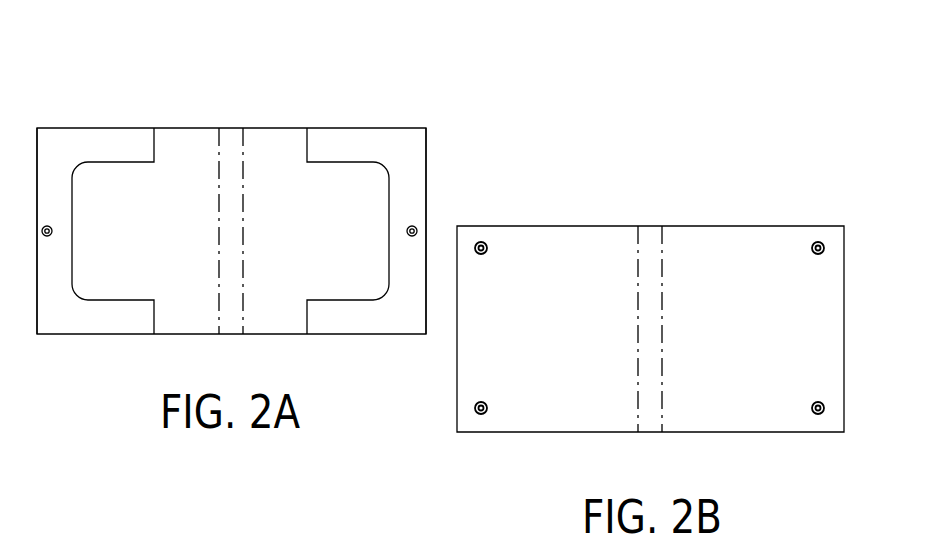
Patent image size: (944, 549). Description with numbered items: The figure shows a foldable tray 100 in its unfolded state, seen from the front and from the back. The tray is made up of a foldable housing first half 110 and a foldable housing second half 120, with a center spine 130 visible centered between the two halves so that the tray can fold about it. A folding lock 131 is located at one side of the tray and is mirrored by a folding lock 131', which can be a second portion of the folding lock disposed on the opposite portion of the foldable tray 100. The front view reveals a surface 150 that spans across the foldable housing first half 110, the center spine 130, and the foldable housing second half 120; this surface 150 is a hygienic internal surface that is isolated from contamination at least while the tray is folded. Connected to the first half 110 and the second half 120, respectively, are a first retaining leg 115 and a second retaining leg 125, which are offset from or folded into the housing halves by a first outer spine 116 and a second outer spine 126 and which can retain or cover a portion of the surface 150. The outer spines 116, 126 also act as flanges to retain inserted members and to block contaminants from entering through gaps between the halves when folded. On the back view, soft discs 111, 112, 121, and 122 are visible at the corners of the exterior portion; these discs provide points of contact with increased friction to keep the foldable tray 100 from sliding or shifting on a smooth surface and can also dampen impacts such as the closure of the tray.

In FIG. 2A, the foldable tray 100 is at (132, 61).
In FIG. 2A, the foldable housing first half 110 is at (179, 126).
In FIG. 2B, the foldable housing first half 110 is at (750, 225).
In FIG. 2B, the soft disc 111 is at (822, 243).
In FIG. 2B, the soft disc 112 is at (817, 415).
In FIG. 2A, the first retaining leg 115 is at (56, 138).
In FIG. 2A, the first outer spine 116 is at (41, 156).
In FIG. 2A, the foldable housing second half 120 is at (270, 126).
In FIG. 2B, the foldable housing second half 120 is at (563, 225).
In FIG. 2B, the soft disc 121 is at (481, 242).
In FIG. 2B, the soft disc 122 is at (480, 415).
In FIG. 2A, the second retaining leg 125 is at (380, 133).
In FIG. 2A, the second outer spine 126 is at (428, 137).
In FIG. 2A, the center spine 130 is at (232, 336).
In FIG. 2B, the center spine 130 is at (650, 225).
In FIG. 2A, the folding lock 131 is at (52, 304).
In FIG. 2A, the folding lock 131' is at (458, 190).
In FIG. 2A, the surface 150 is at (135, 282).